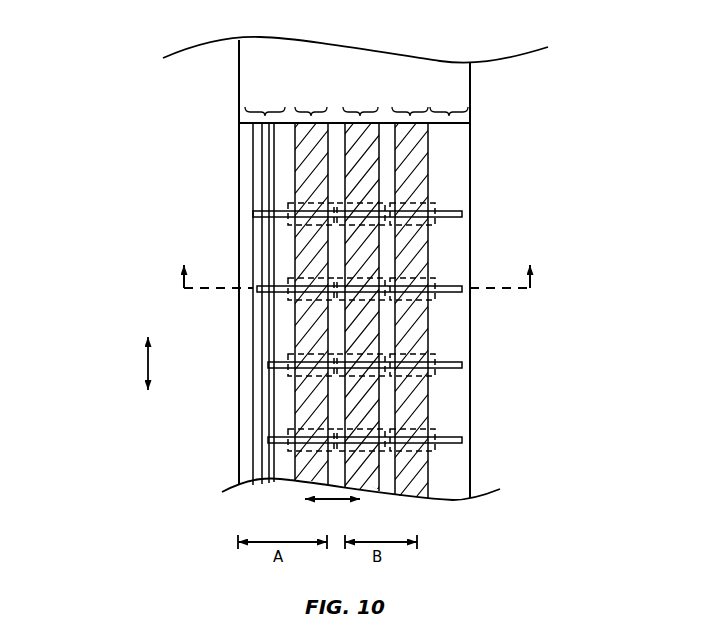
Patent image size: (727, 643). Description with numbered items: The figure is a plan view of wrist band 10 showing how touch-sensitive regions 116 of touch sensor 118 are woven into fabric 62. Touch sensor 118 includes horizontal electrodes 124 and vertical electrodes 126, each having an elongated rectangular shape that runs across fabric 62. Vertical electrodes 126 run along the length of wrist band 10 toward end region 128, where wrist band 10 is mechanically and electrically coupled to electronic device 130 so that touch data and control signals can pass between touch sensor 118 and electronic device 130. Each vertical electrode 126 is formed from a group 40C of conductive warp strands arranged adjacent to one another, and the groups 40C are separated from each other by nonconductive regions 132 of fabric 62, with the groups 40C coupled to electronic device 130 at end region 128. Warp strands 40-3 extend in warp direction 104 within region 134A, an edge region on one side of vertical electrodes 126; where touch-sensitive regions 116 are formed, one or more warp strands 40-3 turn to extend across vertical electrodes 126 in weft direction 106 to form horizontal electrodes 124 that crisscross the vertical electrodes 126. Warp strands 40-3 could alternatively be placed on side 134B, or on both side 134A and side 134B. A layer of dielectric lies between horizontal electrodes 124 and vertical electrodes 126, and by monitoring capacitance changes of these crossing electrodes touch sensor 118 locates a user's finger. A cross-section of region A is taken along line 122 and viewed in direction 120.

The wrist band 10 is at (100, 190).
The electronic device 130 is at (463, 75).
The end region 128 is at (460, 128).
The fabric 62 is at (470, 160).
The nonconductive regions 132 is at (388, 142).
The warp strands 40-3 is at (262, 417).
The horizontal electrodes 124 is at (462, 223).
The touch-sensitive regions 116 is at (288, 233).
The viewing direction 120 is at (533, 276).
The section line 122 is at (205, 293).
The touch sensor 118 is at (498, 228).
The warp direction 104 is at (143, 360).
The weft direction 106 is at (333, 502).
The vertical electrodes 126 is at (372, 489).
The region 134A is at (265, 103).
The group of conductive warp strands 40C is at (361, 103).
The side 134B is at (449, 103).